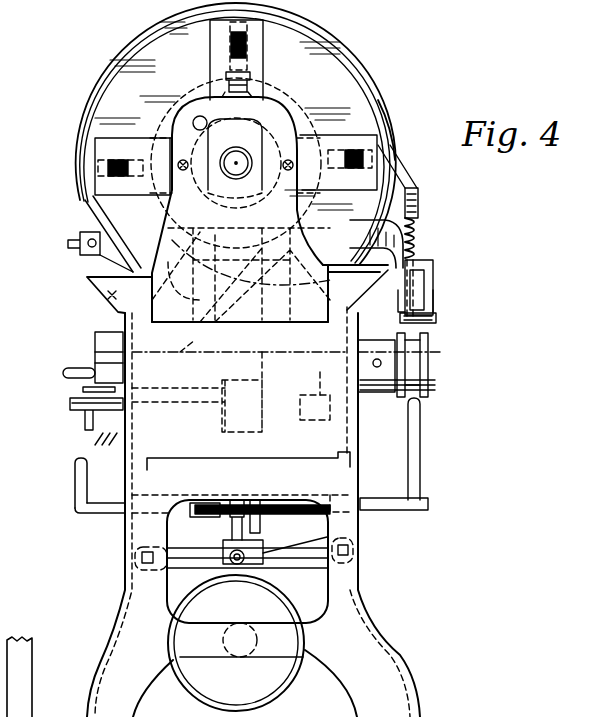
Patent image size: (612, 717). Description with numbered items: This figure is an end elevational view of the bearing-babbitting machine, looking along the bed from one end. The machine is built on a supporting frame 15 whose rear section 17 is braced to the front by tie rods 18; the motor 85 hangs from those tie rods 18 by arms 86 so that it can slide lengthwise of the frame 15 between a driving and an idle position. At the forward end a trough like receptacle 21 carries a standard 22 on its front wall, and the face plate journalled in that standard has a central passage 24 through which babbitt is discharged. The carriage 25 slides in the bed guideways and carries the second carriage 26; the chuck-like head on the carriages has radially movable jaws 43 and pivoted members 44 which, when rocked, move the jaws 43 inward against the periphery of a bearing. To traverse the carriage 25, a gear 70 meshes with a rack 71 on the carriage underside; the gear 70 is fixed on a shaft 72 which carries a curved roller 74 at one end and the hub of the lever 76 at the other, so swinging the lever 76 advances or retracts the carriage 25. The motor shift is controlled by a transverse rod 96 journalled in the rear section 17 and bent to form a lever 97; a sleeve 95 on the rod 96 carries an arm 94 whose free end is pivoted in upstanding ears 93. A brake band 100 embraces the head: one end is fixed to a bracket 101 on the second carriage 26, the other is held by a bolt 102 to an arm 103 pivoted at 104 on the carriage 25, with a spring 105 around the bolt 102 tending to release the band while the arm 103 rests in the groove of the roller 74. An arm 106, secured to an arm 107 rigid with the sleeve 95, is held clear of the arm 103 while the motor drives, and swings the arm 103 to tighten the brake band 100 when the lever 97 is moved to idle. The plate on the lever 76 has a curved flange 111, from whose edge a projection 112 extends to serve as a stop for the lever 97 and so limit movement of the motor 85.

The supporting frame 15 is at (378, 581).
The rear section 17 is at (345, 481).
The tie rods 18 is at (349, 550).
The trough like receptacle 21 is at (113, 295).
The standard 22 is at (400, 272).
The passage 24 is at (238, 162).
The carriage 25 is at (288, 322).
The second carriage 26 is at (397, 167).
The radially movable jaws 43 is at (257, 42).
The members 44 is at (210, 47).
The gear 70 is at (231, 401).
The rack 71 is at (202, 352).
The shaft 72 is at (329, 409).
The curved roller 74 is at (429, 362).
The lever 76 is at (28, 662).
The motor 85 is at (285, 672).
The arms 86 is at (300, 587).
The upstanding ears 93 is at (233, 540).
The arm 94 is at (263, 532).
The sleeve 95 is at (200, 517).
The rod 96 is at (108, 512).
The lever 97 is at (75, 485).
The brake band 100 is at (388, 118).
The bracket 101 is at (80, 238).
The bolt 102 is at (424, 242).
The arm 103 is at (437, 323).
The pivot 104 is at (435, 300).
The spring 105 is at (418, 219).
The arm 106 is at (420, 437).
The arm 107 is at (393, 512).
The flange 111 is at (96, 415).
The projection 112 is at (78, 412).